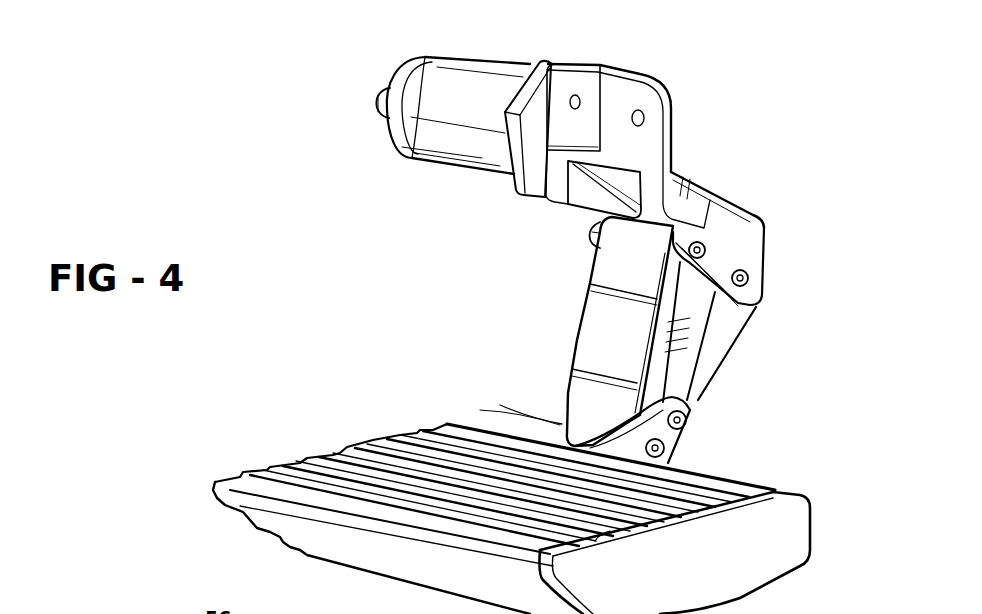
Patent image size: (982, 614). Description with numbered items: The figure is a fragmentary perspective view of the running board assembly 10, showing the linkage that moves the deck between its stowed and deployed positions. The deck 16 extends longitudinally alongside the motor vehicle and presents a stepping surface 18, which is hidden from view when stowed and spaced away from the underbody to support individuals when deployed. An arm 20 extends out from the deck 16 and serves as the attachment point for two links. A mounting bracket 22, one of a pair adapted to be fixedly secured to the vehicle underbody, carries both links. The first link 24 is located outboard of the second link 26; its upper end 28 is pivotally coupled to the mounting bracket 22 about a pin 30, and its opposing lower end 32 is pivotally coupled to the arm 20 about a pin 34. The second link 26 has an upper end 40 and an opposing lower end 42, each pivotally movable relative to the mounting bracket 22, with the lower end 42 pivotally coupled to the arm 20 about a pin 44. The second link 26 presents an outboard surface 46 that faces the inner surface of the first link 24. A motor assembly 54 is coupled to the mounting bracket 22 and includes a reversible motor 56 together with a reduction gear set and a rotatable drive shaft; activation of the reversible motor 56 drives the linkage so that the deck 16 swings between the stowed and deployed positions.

The running board assembly 10 is at (719, 100).
The deck 16 is at (810, 512).
The stepping surface 18 is at (433, 458).
The arm 20 is at (540, 413).
The mounting bracket 22 is at (656, 86).
The first link 24 is at (577, 340).
The second link 26 is at (712, 380).
The upper end 28 is at (594, 228).
The pin 30 is at (705, 248).
The lower end 32 is at (560, 420).
The pin 34 is at (664, 449).
The upper end 40 is at (743, 310).
The lower end 42 is at (693, 400).
The pin 44 is at (686, 420).
The outboard surface 46 is at (683, 307).
The motor assembly 54 is at (531, 50).
The reversible motor 56 is at (463, 62).